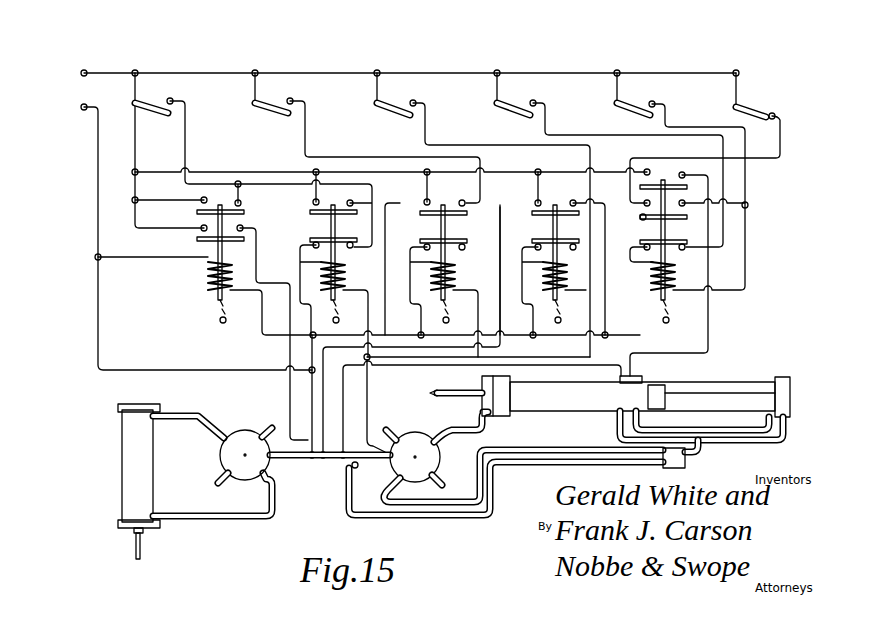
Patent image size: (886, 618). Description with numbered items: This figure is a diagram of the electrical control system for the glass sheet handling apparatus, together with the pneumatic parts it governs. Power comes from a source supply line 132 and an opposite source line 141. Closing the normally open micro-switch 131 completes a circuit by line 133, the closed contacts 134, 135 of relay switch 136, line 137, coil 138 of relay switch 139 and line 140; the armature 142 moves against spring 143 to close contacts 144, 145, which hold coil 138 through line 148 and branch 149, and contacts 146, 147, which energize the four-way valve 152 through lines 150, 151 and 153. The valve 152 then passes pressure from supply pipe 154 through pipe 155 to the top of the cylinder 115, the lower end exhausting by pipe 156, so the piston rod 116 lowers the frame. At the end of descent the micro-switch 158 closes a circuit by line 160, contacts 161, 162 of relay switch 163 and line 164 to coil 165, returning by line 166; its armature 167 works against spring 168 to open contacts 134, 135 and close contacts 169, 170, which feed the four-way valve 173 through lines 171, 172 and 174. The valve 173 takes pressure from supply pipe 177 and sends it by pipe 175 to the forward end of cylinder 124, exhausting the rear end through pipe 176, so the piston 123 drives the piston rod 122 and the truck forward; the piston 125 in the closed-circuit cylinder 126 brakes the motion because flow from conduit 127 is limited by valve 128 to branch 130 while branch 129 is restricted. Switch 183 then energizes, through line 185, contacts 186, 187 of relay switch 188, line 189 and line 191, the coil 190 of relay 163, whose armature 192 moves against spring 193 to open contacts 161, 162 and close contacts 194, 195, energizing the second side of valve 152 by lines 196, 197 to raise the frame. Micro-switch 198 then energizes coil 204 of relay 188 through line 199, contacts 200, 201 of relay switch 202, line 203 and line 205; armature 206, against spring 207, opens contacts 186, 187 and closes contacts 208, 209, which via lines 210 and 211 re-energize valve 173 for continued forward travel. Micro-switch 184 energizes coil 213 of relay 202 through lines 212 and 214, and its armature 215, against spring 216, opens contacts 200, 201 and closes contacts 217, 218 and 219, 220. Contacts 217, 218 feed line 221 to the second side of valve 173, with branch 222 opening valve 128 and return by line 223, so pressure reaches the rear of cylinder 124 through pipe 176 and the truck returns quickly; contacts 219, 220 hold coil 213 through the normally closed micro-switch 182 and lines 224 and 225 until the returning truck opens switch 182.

The cylinder 115 is at (122, 483).
The piston rod 116 is at (135, 552).
The piston rod 122 is at (436, 393).
The piston 123 is at (482, 390).
The cylinder 124 is at (590, 410).
The piston 125 is at (668, 392).
The cylinder 126 is at (742, 388).
The conduit 127 is at (662, 431).
The valve 128 is at (686, 460).
The conduit branch 129 is at (698, 445).
The conduit branch 130 is at (742, 440).
The micro-switch 131 is at (158, 112).
The source supply line 132 is at (303, 72).
The line 133 is at (186, 126).
The contact 134 is at (312, 247).
The contact 135 is at (321, 232).
The relay switch 136 is at (345, 262).
The line 137 is at (291, 288).
The coil 138 is at (210, 285).
The relay switch 139 is at (227, 315).
The line 140 is at (165, 258).
The source line 141 is at (98, 225).
The armature 142 is at (224, 255).
The spring 143 is at (218, 320).
The contact 144 is at (195, 212).
The contact 145 is at (181, 197).
The contact 146 is at (200, 228).
The contact 147 is at (196, 240).
The line 148 is at (152, 200).
The branch 149 is at (240, 197).
The line 150 is at (128, 244).
The line 151 is at (270, 268).
The four-way electrically operated valve 152 is at (246, 440).
The line 153 is at (145, 368).
The supply pipe 154 is at (228, 478).
The pipe 155 is at (195, 415).
The pipe 156 is at (195, 522).
The micro-switch 158 is at (280, 112).
The line 160 is at (307, 150).
The contact 161 is at (436, 224).
The contact 162 is at (414, 260).
The relay switch 163 is at (455, 290).
The line 164 is at (402, 308).
The coil 165 is at (344, 290).
The line 166 is at (325, 312).
The armature 167 is at (336, 228).
The spring 168 is at (335, 319).
The contact 169 is at (312, 213).
The contact 170 is at (297, 199).
The line 171 is at (314, 177).
The line 172 is at (388, 240).
The four-way valve 173 is at (417, 440).
The line 174 is at (322, 462).
The pipe 175 is at (458, 425).
The pipe 176 is at (440, 495).
The supply pipe 177 is at (440, 465).
The micro-switch 182 is at (756, 112).
The switch 183 is at (400, 114).
The micro-switch 184 is at (630, 112).
The line 185 is at (437, 145).
The contact 186 is at (570, 252).
The contact 187 is at (530, 242).
The relay switch 188 is at (565, 298).
The line 189 is at (530, 305).
The coil 190 is at (455, 277).
The line 191 is at (422, 327).
The armature 192 is at (446, 260).
The spring 193 is at (463, 318).
The contact 194 is at (448, 232).
The contact 195 is at (447, 202).
The line 196 is at (425, 190).
The line 197 is at (500, 212).
The micro-switch 198 is at (520, 114).
The line 199 is at (558, 135).
The contact 200 is at (672, 262).
The contact 201 is at (646, 243).
The relay switch 202 is at (668, 310).
The line 203 is at (606, 300).
The coil 204 is at (568, 270).
The line 205 is at (515, 327).
The armature 206 is at (560, 230).
The spring 207 is at (575, 319).
The contact 208 is at (538, 222).
The contact 209 is at (563, 200).
The line 210 is at (540, 187).
The line 211 is at (595, 210).
The line 212 is at (676, 126).
The coil 213 is at (670, 283).
The line 214 is at (628, 354).
The armature 215 is at (670, 232).
The spring 216 is at (680, 347).
The contact 217 is at (652, 165).
The contact 218 is at (663, 179).
The contact 219 is at (690, 202).
The contact 220 is at (642, 219).
The line 221 is at (686, 176).
The branch line 222 is at (343, 500).
The line 223 is at (532, 450).
The line 224 is at (765, 165).
The line 225 is at (748, 206).